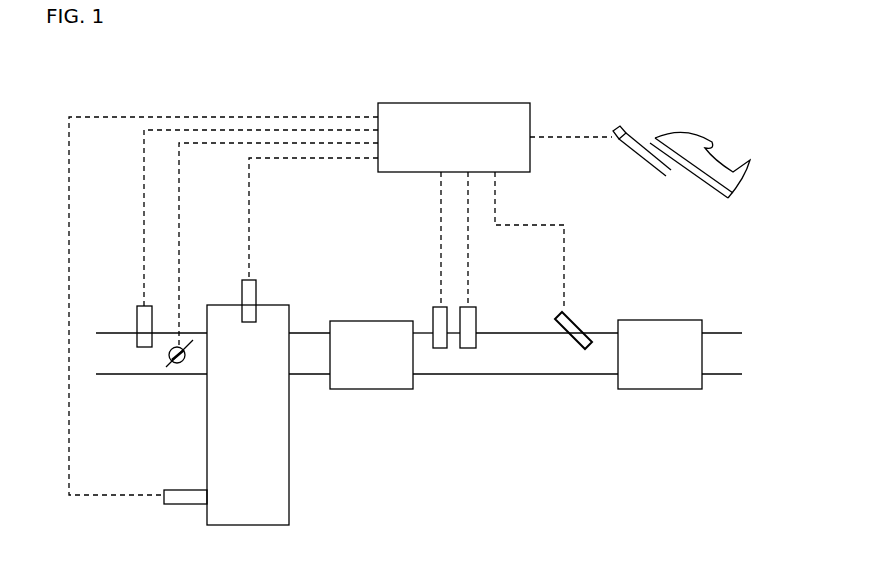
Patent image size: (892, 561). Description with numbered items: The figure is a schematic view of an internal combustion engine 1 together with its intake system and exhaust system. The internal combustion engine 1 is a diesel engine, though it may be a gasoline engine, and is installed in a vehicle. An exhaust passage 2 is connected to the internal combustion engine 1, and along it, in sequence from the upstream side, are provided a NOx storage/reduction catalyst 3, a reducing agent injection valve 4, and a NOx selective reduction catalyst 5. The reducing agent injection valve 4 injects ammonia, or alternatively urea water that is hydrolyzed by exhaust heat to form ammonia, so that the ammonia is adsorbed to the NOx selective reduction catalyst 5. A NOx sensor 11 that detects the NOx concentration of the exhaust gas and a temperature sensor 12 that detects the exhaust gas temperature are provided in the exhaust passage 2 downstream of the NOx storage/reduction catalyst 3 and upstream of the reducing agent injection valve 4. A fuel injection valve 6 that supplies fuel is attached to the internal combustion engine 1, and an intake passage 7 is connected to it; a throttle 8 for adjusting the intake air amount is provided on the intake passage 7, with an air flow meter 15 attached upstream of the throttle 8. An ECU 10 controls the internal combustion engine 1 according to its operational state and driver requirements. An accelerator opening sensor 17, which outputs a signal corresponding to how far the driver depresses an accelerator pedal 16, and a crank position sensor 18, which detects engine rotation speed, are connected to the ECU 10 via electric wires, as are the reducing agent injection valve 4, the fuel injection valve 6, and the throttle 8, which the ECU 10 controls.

The internal combustion engine 1 is at (289, 497).
The exhaust passage 2 is at (450, 374).
The NOx storage/reduction catalyst 3 is at (355, 389).
The reducing agent injection valve 4 is at (580, 312).
The NOx selective reduction catalyst 5 is at (655, 389).
The fuel injection valve 6 is at (256, 282).
The intake passage 7 is at (143, 376).
The throttle 8 is at (177, 363).
The ECU 10 is at (378, 172).
The NOx sensor 11 is at (433, 308).
The temperature sensor 12 is at (476, 308).
The air flow meter 15 is at (137, 318).
The accelerator pedal 16 is at (678, 182).
The accelerator opening sensor 17 is at (612, 137).
The crank position sensor 18 is at (187, 487).